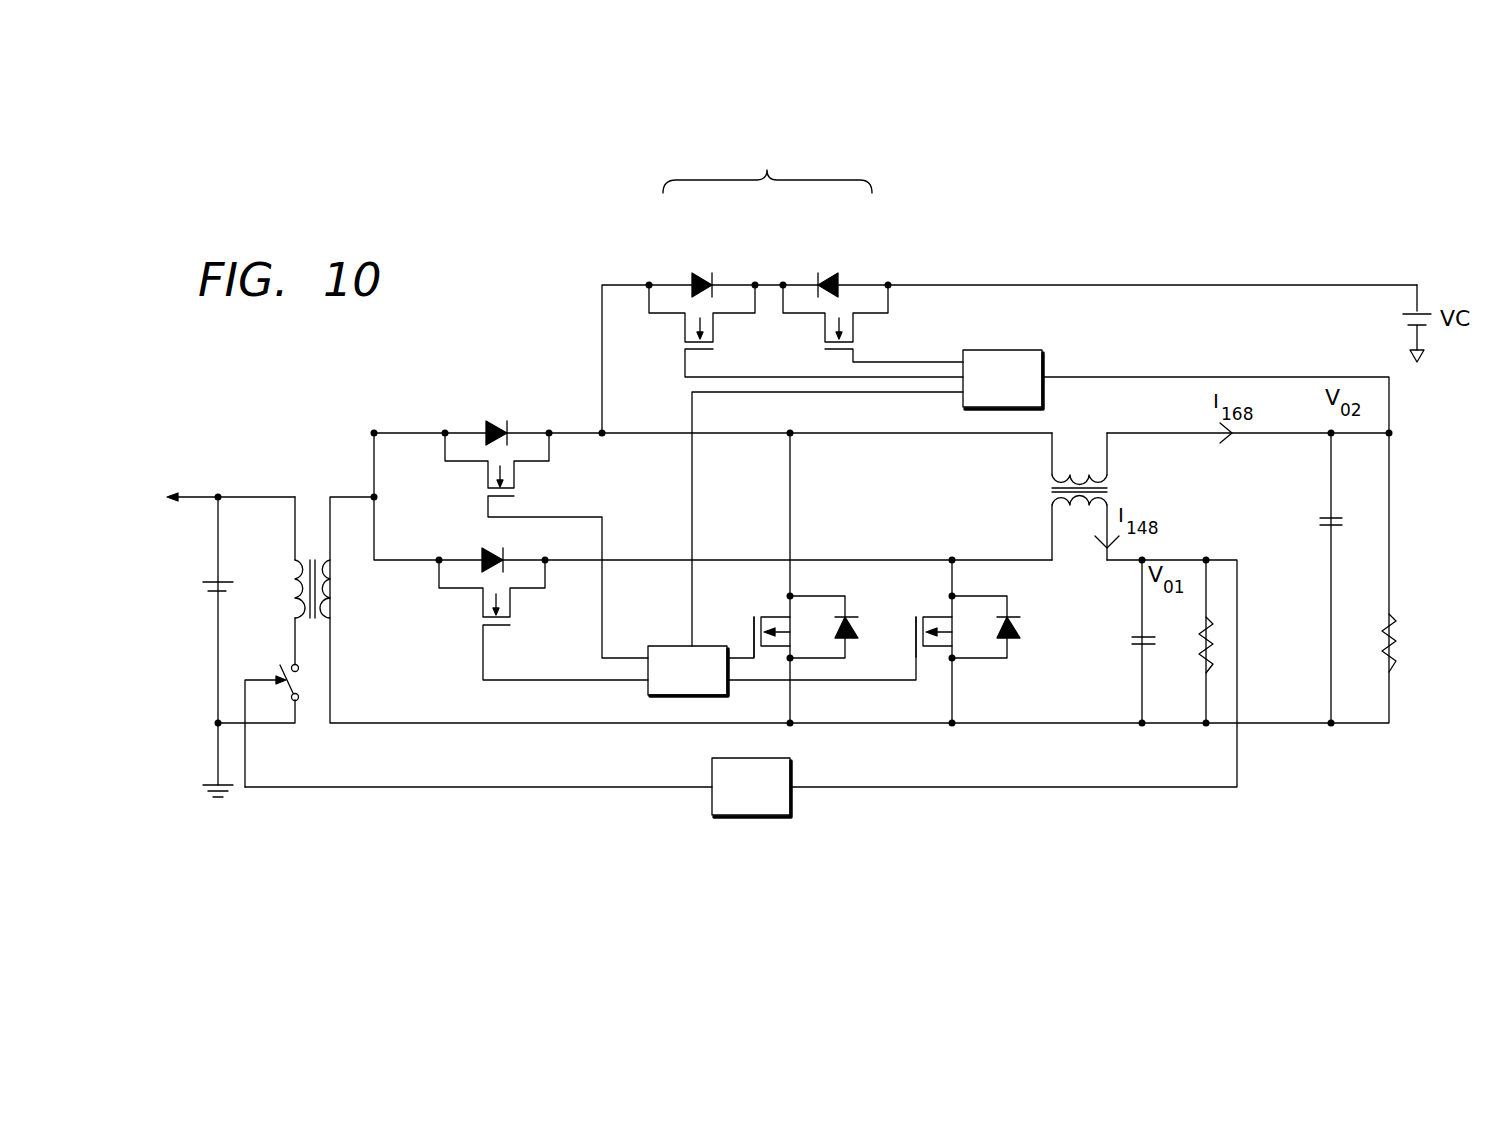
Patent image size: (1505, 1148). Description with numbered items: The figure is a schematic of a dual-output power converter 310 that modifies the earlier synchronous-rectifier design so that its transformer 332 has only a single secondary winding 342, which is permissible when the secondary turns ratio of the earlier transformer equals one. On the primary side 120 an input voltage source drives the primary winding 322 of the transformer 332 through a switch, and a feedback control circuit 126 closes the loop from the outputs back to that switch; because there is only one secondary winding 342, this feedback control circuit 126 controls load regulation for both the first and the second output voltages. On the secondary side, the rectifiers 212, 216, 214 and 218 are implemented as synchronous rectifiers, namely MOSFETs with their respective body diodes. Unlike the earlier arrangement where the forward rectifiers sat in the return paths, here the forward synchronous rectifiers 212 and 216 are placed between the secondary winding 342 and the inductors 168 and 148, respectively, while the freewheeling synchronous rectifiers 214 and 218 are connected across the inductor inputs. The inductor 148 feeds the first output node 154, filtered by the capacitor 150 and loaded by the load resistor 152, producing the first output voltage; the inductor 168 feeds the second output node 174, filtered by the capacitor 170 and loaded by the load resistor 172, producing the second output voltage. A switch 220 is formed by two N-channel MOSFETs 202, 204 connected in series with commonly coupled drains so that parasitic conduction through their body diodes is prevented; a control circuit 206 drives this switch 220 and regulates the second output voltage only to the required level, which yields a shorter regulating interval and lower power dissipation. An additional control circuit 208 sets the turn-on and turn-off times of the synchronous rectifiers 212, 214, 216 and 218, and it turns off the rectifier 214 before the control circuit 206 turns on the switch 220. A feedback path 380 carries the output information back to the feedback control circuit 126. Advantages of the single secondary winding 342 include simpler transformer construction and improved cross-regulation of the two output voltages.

The primary side 120 is at (248, 497).
The primary winding 322 is at (293, 568).
The transformer 332 is at (329, 547).
The secondary winding 342 is at (333, 612).
The synchronous rectifier 212 is at (467, 433).
The synchronous rectifier 216 is at (470, 588).
The N-channel MOSFET 202 is at (671, 285).
The N-channel MOSFET 204 is at (800, 285).
The switch 220 is at (768, 176).
The control circuit 206 is at (998, 350).
The control circuit 208 is at (672, 646).
The converter 310 is at (563, 305).
The synchronous rectifier 214 is at (822, 605).
The synchronous rectifier 218 is at (1007, 658).
The inductor 168 is at (1078, 446).
The inductor 148 is at (1080, 556).
The first output node 154 is at (1205, 558).
The capacitor 150 is at (1130, 650).
The load resistor 152 is at (1224, 642).
The capacitor 170 is at (1322, 520).
The load resistor 172 is at (1400, 642).
The second output node 174 is at (1389, 433).
The feedback control circuit 126 is at (757, 816).
The feedback path 380 is at (864, 752).